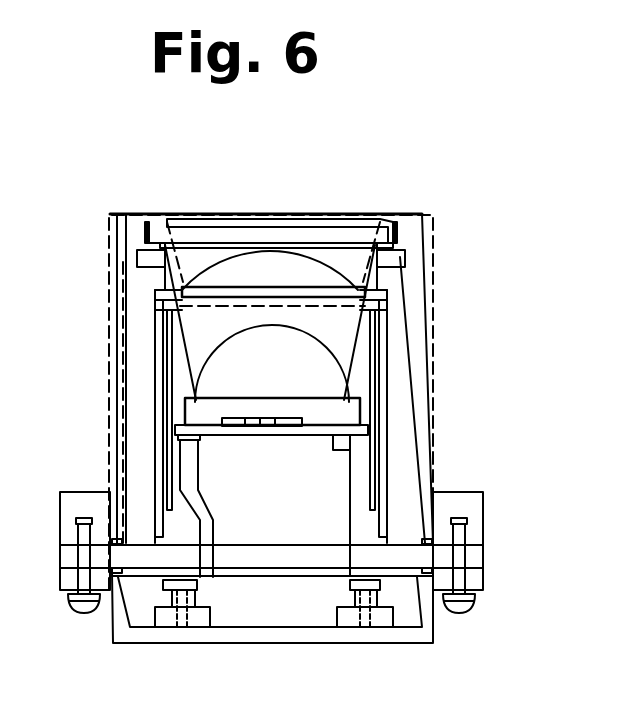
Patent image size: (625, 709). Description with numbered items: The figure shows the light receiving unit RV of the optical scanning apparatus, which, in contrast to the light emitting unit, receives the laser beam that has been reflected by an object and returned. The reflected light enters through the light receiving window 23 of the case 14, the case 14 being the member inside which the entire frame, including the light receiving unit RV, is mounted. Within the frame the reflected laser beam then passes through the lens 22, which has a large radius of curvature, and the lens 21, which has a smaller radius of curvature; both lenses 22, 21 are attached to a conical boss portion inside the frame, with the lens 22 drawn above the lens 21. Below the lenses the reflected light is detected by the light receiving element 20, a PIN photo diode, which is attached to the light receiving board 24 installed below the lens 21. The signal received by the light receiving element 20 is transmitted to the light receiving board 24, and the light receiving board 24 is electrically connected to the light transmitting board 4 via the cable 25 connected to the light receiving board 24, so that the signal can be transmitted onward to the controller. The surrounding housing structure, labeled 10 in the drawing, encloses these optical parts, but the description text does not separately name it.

The light receiving unit RV is at (363, 205).
The housing 10 is at (414, 291).
The light receiving window 23 is at (301, 237).
The lens 22 is at (365, 258).
The lens 21 is at (325, 368).
The light receiving element 20 is at (275, 413).
The light receiving board 24 is at (328, 428).
The cable 25 is at (197, 463).
The case 14 is at (427, 473).
The light transmitting board 4 is at (274, 578).